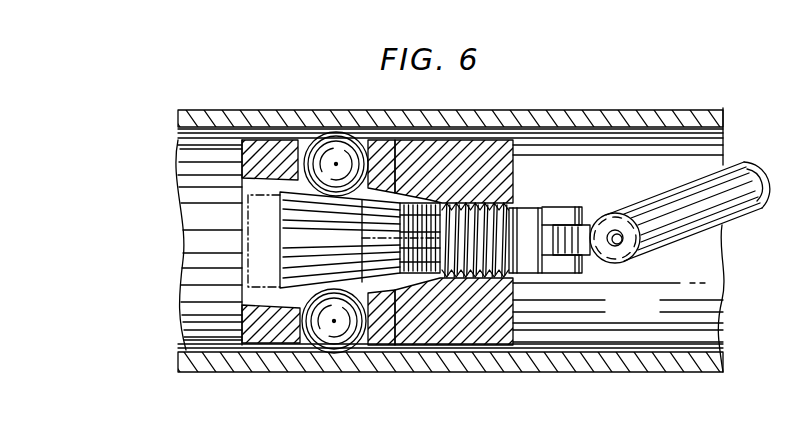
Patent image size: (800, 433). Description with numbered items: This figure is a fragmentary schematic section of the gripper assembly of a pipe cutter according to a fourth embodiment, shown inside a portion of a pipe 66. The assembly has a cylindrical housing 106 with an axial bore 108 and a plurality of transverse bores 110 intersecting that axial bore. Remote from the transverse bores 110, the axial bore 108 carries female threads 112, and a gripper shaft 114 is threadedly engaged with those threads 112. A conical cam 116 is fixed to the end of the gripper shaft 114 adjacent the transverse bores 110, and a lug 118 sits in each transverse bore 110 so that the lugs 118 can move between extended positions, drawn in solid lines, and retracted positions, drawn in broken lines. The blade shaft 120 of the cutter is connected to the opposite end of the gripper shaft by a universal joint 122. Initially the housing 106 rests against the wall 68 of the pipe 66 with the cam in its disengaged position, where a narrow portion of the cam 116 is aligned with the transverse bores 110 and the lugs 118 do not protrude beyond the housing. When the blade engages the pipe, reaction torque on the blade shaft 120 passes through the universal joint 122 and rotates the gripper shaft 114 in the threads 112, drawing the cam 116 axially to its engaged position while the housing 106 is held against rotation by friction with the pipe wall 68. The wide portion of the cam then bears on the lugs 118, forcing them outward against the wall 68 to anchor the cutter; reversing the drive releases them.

The pipe 66 is at (604, 371).
The wall of the pipe 68 is at (484, 362).
The cylindrical housing 106 is at (455, 150).
The axial bore 108 is at (258, 184).
The transverse bores 110 is at (392, 142).
The female threads 112 is at (515, 200).
The gripper shaft 114 is at (567, 208).
The conical cam 116 is at (290, 238).
The lugs 118 is at (336, 158).
The blade shaft 120 is at (733, 222).
The universal joint 122 is at (593, 265).